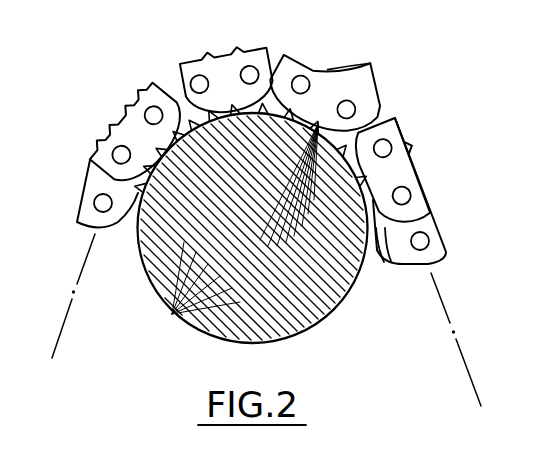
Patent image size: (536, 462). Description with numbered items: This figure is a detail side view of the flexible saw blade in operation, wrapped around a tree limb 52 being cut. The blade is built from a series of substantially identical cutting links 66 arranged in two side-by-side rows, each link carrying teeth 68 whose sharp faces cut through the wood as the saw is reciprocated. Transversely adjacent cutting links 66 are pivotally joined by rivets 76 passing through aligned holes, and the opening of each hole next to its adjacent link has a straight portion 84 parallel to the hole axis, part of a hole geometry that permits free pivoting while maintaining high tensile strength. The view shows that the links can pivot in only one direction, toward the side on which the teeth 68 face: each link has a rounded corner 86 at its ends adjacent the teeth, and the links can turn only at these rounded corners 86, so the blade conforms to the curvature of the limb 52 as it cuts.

The limb 52 is at (331, 311).
The cutting link 66 is at (373, 66).
The teeth 68 is at (389, 260).
The rivet 76 is at (92, 164).
The straight portion 84 is at (180, 72).
The rounded corner 86 is at (271, 76).